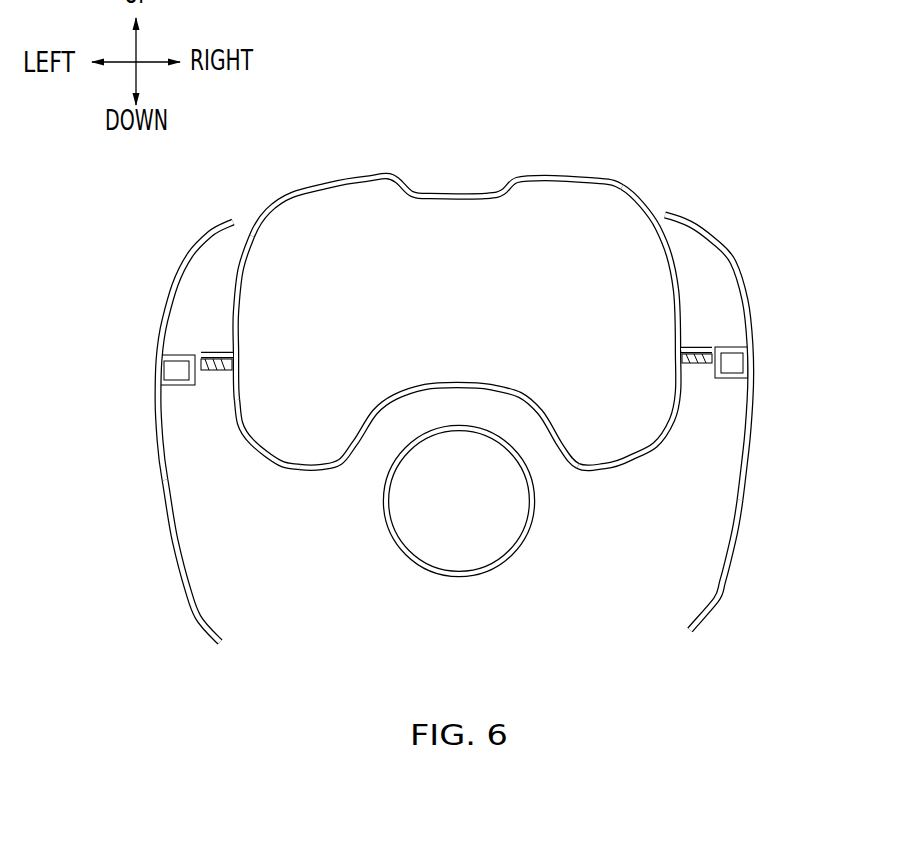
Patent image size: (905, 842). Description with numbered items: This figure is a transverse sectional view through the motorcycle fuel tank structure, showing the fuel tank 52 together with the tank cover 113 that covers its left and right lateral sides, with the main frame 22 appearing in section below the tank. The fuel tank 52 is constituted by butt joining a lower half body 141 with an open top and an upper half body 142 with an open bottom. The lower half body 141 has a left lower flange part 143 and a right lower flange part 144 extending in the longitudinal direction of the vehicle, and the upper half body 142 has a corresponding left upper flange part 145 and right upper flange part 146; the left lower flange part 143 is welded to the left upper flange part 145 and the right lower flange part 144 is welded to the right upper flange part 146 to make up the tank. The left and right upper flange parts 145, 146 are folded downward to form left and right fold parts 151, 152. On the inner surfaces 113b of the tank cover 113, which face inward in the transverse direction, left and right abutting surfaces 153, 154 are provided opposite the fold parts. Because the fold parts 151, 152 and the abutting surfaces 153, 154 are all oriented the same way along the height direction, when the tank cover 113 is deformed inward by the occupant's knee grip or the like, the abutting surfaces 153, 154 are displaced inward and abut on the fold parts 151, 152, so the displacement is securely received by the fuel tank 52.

The fuel tank 52 is at (451, 302).
The upper half body 142 is at (561, 176).
The lower half body 141 is at (612, 464).
The left lower flange part 143 is at (212, 376).
The right lower flange part 144 is at (697, 364).
The left upper flange part 145 is at (205, 354).
The right upper flange part 146 is at (700, 347).
The left fold part 151 is at (200, 371).
The right fold part 152 is at (709, 376).
The left abutting surface 153 is at (185, 386).
The right abutting surface 154 is at (730, 380).
The tank cover 113 is at (477, 399).
The inner surfaces 113b is at (185, 542).
The main frame 22 is at (517, 553).